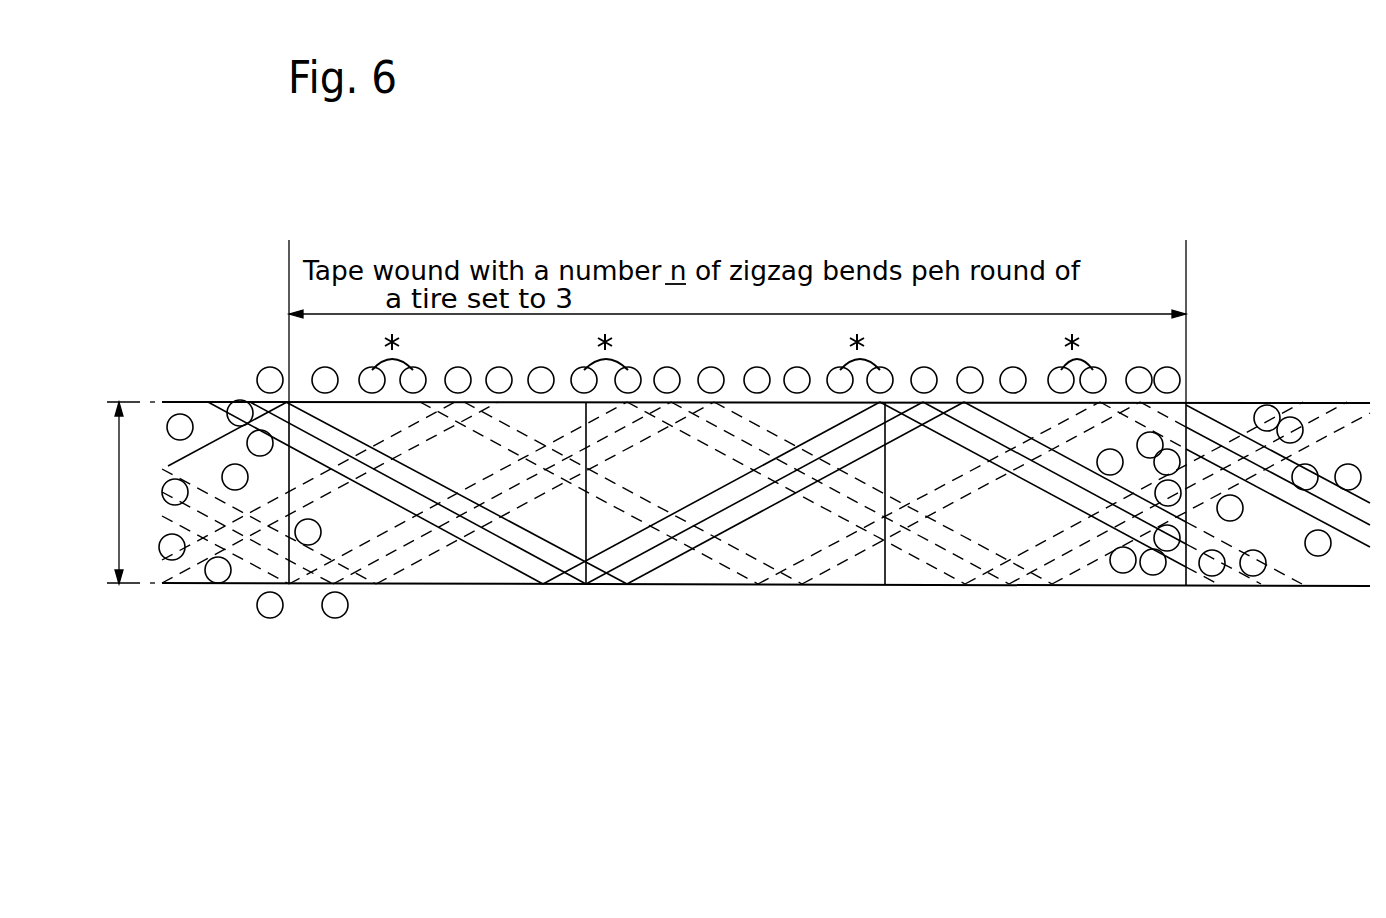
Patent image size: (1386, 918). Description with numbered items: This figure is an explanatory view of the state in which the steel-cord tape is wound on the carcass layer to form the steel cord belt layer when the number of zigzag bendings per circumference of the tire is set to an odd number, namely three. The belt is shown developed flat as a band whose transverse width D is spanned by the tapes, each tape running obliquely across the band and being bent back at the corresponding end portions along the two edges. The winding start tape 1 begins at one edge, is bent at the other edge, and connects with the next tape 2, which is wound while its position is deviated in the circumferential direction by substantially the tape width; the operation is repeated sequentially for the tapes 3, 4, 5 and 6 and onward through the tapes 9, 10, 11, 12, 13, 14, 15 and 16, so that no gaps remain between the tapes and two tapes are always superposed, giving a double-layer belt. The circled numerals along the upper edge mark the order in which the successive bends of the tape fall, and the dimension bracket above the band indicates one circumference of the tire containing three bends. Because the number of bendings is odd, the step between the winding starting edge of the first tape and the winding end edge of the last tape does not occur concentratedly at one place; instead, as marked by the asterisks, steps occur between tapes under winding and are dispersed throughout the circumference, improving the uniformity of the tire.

The tire width dimension D is at (131, 493).
The winding start tape 1 is at (718, 492).
The next tape 2 is at (840, 412).
The tape 3 is at (789, 461).
The tape 4 is at (693, 492).
The tape 5 is at (731, 471).
The tape 6 is at (772, 459).
The winding round 9 bend 9 is at (764, 428).
The winding round 10 bend 10 is at (757, 380).
The winding round 11 bend 11 is at (541, 380).
The winding round 12 bend 12 is at (669, 380).
The winding round 13 bend 13 is at (797, 380).
The winding round 14 bend 14 is at (584, 380).
The winding round 15 bend 15 is at (716, 380).
The winding round 16 bend 16 is at (840, 380).